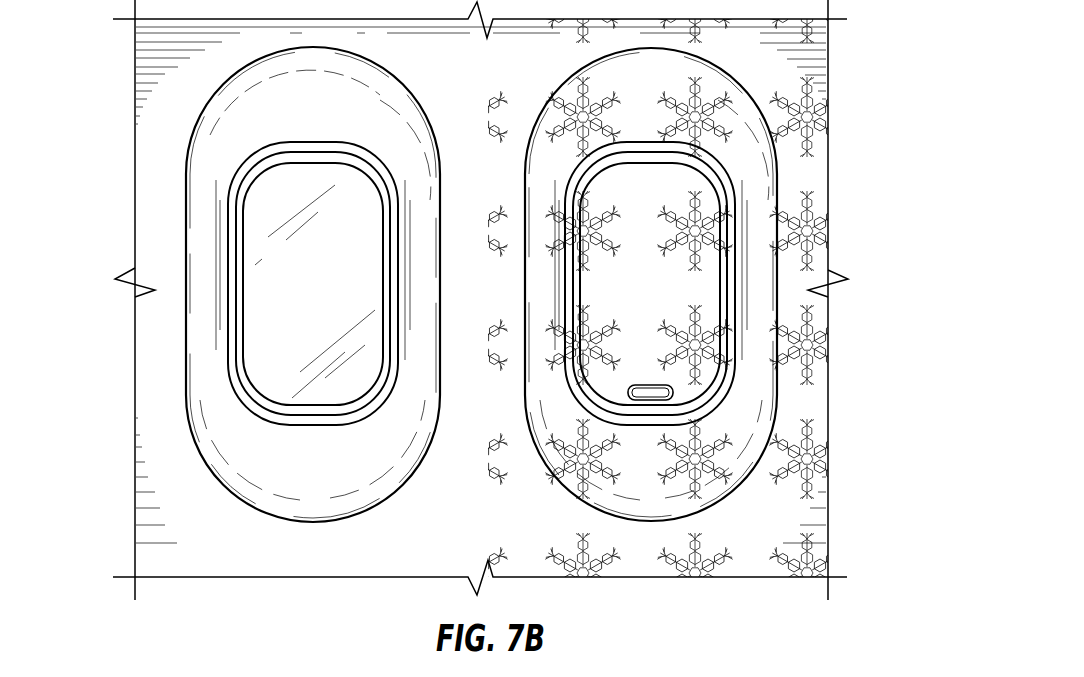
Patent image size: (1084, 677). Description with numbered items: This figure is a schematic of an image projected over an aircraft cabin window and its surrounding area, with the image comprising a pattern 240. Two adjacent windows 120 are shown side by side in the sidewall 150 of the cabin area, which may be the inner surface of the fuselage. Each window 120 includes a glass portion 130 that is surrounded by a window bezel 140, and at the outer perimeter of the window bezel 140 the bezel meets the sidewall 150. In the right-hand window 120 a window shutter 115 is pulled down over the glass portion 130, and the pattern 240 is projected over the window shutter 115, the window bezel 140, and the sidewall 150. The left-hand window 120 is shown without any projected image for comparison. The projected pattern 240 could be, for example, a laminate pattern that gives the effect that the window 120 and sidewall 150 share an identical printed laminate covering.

The window shutter 115 is at (680, 266).
The window 120 is at (565, 271).
The glass portion 130 is at (338, 301).
The window bezel 140 is at (241, 478).
The sidewall 150 is at (506, 208).
The pattern 240 is at (798, 114).